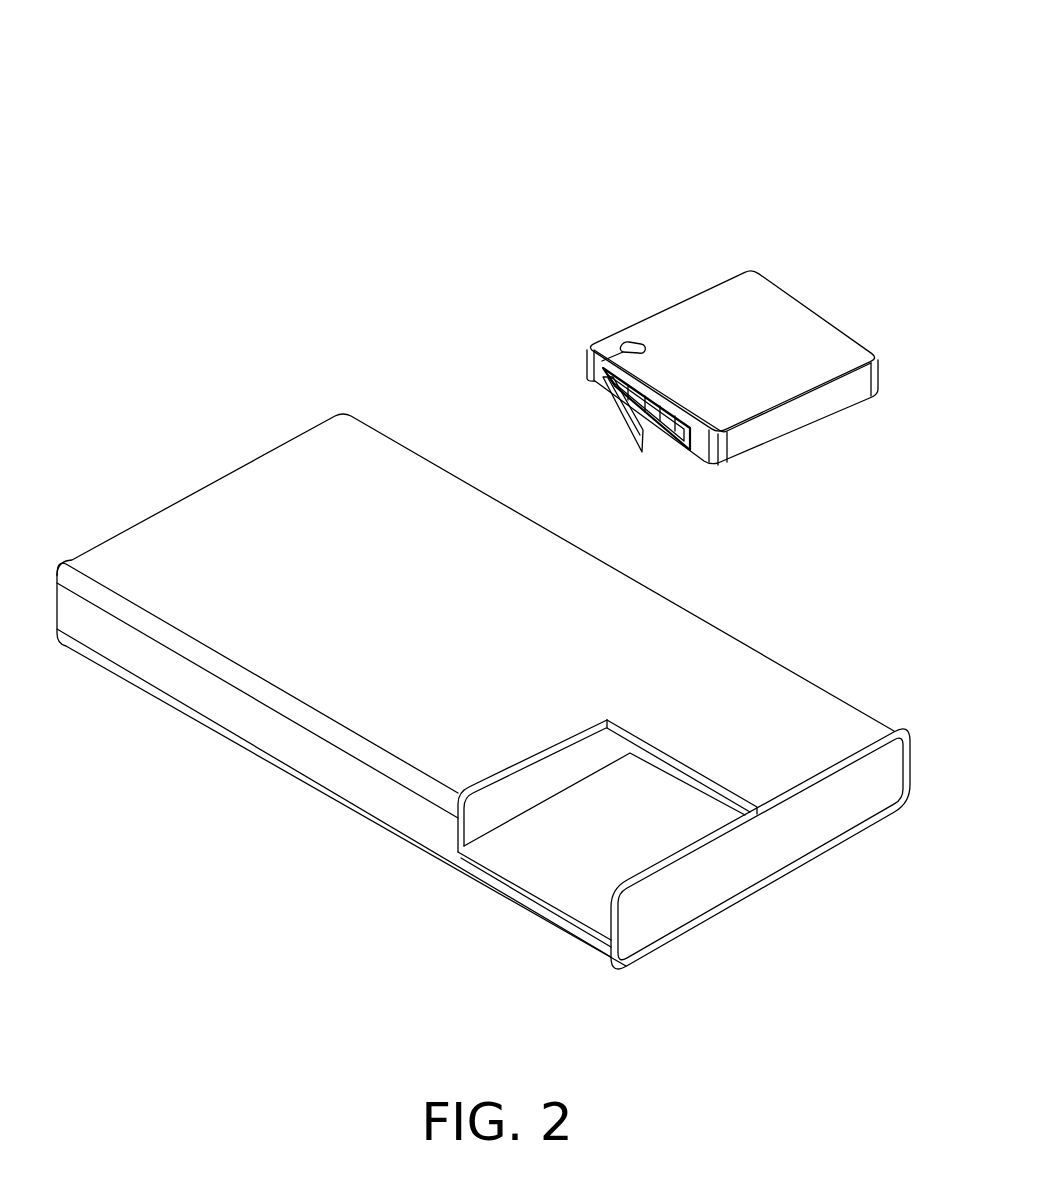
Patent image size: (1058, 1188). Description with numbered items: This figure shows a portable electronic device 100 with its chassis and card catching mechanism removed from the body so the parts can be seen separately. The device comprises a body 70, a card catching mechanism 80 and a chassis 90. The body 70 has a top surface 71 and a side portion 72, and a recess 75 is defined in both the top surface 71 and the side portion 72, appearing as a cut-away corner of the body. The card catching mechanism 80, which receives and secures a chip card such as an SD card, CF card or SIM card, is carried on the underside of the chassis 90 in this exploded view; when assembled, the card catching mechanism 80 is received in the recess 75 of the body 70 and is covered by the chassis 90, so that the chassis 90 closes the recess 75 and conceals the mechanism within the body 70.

The portable electronic device 100 is at (490, 147).
The body 70 is at (198, 732).
The top surface 71 is at (757, 746).
The side portion 72 is at (316, 750).
The recess 75 is at (552, 880).
The chassis 90 is at (682, 318).
The card catching mechanism 80 is at (663, 425).